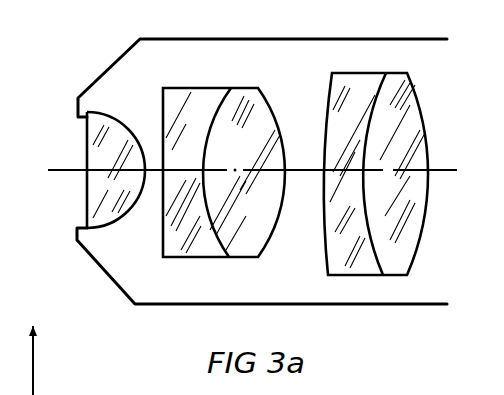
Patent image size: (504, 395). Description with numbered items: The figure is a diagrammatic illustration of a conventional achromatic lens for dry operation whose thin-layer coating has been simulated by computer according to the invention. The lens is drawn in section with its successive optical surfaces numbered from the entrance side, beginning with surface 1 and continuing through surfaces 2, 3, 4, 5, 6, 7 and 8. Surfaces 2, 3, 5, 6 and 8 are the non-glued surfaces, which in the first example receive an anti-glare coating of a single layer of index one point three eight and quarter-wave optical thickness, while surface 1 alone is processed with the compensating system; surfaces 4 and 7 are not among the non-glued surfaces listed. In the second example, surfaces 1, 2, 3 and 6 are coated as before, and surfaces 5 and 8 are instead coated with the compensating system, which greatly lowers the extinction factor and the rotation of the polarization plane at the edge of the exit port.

The surface number 1 is at (103, 196).
The surface number 2 is at (130, 220).
The surface number 3 is at (165, 180).
The surface number 4 is at (214, 240).
The surface number 5 is at (274, 104).
The surface number 6 is at (322, 239).
The surface number 7 is at (376, 99).
The surface number 8 is at (426, 229).